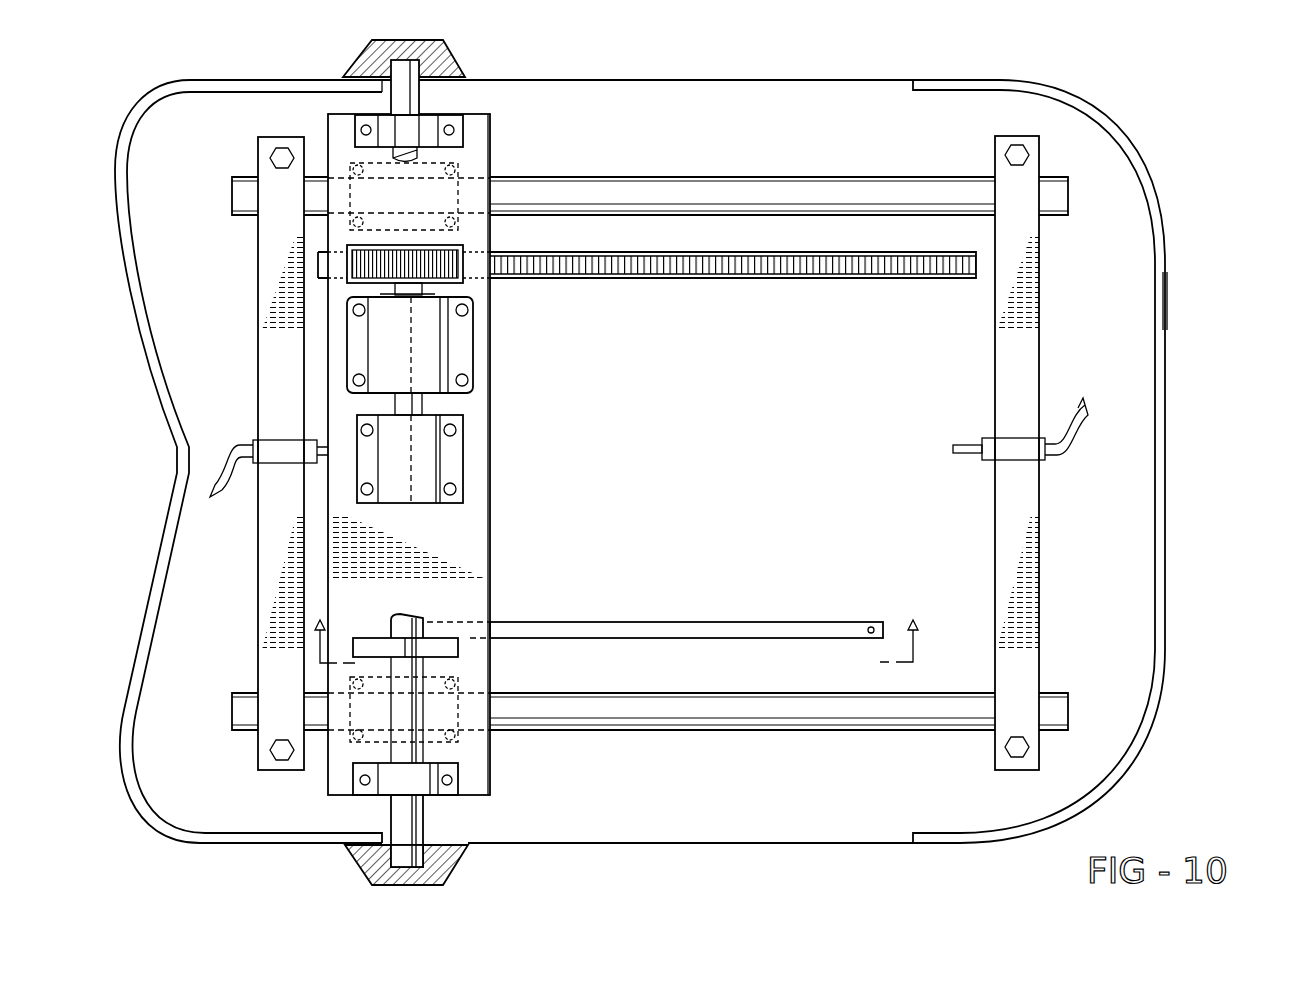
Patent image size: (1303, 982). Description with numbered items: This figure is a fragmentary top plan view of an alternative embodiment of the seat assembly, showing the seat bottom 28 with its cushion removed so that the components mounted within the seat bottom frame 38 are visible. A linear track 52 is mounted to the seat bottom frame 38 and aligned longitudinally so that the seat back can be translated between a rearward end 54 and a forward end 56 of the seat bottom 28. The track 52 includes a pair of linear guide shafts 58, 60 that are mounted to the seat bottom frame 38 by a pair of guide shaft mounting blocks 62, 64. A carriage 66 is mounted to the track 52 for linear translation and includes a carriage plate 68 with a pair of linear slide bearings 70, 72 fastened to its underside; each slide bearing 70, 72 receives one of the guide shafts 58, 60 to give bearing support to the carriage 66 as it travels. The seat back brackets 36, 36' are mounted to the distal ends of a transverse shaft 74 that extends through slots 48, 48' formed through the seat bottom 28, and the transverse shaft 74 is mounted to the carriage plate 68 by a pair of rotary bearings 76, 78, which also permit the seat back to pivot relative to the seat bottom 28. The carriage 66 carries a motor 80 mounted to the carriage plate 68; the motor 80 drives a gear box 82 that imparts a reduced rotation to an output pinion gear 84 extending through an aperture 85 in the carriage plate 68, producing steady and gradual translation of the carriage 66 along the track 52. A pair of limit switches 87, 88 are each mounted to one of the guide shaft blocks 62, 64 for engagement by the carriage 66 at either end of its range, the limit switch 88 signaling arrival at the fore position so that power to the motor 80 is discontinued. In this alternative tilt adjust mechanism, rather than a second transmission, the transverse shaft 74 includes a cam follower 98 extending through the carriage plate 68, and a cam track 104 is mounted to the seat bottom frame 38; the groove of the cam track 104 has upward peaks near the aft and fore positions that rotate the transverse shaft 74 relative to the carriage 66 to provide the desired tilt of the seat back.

The seat bottom 28 is at (1130, 128).
The seat back bracket 36 is at (435, 886).
The seat back bracket 36' is at (429, 64).
The seat bottom frame 38 is at (1167, 266).
The slot 48 is at (816, 774).
The slot 48' is at (691, 62).
The linear track 52 is at (797, 172).
The rearward end 54 is at (119, 142).
The forward end 56 is at (1153, 203).
The linear guide shaft 58 is at (687, 177).
The linear guide shaft 60 is at (692, 730).
The guide shaft mounting block 62 is at (257, 556).
The guide shaft mounting block 64 is at (1042, 553).
The carriage 66 is at (335, 104).
The carriage plate 68 is at (326, 122).
The linear slide bearing 70 is at (348, 197).
The linear slide bearing 72 is at (458, 742).
The transverse shaft 74 is at (407, 826).
The rotary bearing 76 is at (464, 133).
The rotary bearing 78 is at (355, 805).
The motor 80 is at (463, 477).
The gear box 82 is at (472, 378).
The output pinion gear 84 is at (462, 258).
The aperture 85 is at (346, 233).
The limit switch 87 is at (313, 438).
The limit switch 88 is at (985, 438).
The cam follower 98 is at (443, 645).
The cam track 104 is at (703, 622).